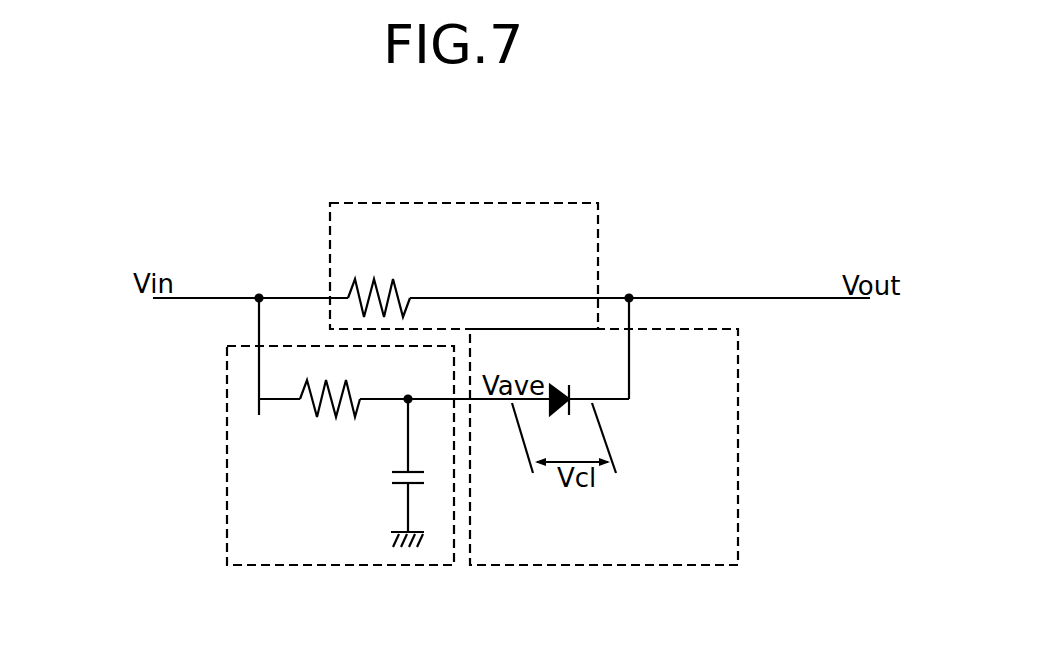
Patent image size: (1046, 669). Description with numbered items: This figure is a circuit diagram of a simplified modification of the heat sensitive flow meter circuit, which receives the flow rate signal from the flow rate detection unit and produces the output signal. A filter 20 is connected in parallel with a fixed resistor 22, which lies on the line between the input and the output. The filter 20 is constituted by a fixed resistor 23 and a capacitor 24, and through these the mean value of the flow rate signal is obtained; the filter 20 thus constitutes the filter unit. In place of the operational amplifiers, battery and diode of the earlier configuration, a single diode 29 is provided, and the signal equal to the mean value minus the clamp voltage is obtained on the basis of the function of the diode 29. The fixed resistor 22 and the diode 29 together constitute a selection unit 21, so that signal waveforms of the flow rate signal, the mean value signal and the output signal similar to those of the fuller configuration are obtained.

The fixed resistor 22 is at (402, 292).
The filter 20 is at (347, 568).
The selection unit 21 is at (608, 568).
The fixed resistor 23 is at (330, 423).
The capacitor 24 is at (392, 475).
The diode 29 is at (573, 408).